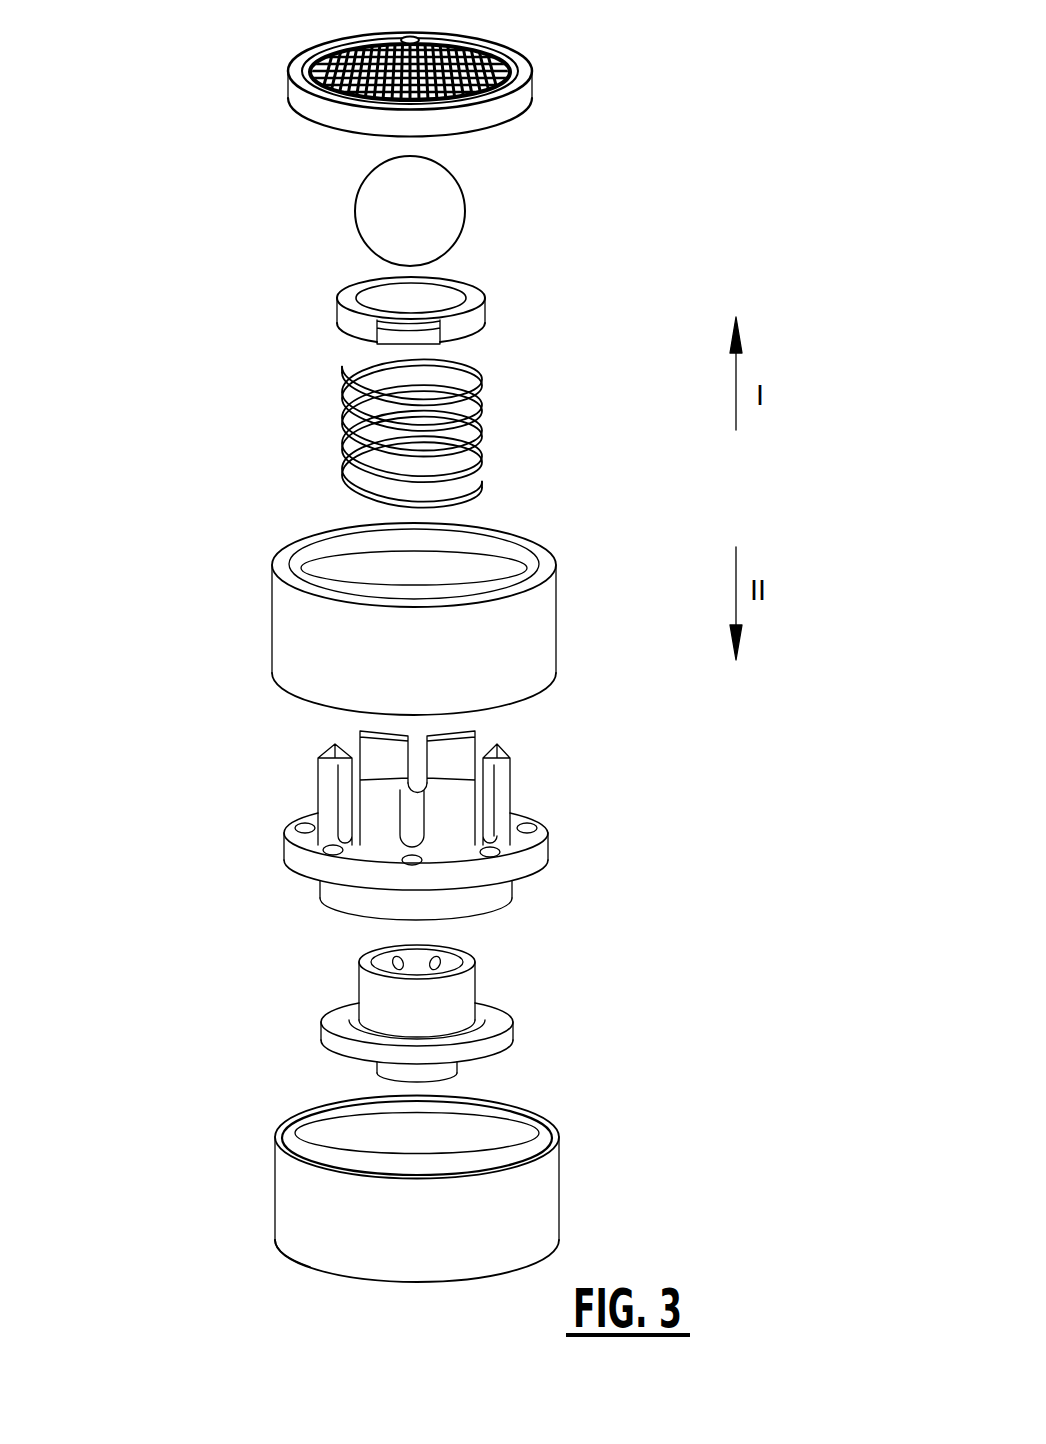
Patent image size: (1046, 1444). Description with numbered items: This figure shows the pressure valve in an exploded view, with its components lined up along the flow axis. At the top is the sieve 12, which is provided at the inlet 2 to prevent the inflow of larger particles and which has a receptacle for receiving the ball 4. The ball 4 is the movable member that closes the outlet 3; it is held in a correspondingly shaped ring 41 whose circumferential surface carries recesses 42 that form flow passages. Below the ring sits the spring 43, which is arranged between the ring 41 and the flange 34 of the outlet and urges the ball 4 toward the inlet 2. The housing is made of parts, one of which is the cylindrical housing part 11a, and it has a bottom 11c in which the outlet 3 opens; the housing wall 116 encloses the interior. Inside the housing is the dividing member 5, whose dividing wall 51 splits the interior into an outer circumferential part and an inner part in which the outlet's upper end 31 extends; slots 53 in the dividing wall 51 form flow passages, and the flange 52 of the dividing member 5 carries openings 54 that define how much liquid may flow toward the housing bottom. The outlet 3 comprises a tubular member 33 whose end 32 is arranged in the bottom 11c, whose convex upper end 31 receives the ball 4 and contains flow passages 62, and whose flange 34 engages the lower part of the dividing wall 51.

The sieve 12 is at (522, 101).
The ball 4 is at (435, 204).
The ring 41 is at (444, 323).
The recesses 42 is at (373, 333).
The spring 43 is at (467, 425).
The inlet 2 is at (343, 580).
The housing wall 116 is at (297, 628).
The dividing member 5 is at (437, 767).
The dividing wall 51 is at (470, 729).
The flange 52 is at (402, 834).
The slots 53 is at (415, 755).
The openings 54 is at (300, 826).
The outlet 3 is at (467, 1008).
The upper end of the tubular member 31 is at (420, 982).
The end of the tubular member 32 is at (447, 1073).
The tubular member 33 is at (382, 992).
The flange 34 is at (330, 1043).
The flow passages 62 is at (396, 960).
The housing part 11a is at (540, 1200).
The bottom 11c is at (305, 1267).